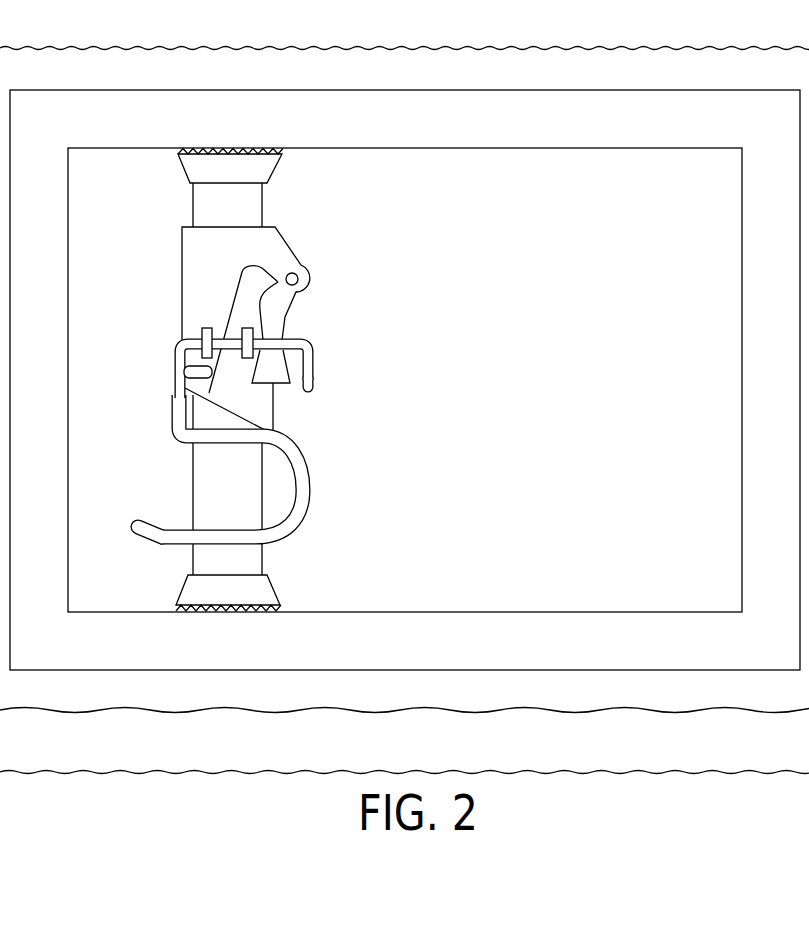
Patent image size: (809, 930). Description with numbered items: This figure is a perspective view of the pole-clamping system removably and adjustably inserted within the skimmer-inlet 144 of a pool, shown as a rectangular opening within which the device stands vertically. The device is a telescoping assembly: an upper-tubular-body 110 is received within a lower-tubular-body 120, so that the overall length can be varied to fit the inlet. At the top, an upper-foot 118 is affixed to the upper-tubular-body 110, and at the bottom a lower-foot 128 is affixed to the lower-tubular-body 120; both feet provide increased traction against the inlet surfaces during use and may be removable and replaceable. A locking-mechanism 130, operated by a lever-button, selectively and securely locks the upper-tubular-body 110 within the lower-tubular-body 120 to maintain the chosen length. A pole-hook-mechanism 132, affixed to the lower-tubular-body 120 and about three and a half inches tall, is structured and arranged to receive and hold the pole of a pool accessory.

The upper-tubular-body 110 is at (287, 207).
The upper-foot 118 is at (182, 168).
The lower-tubular-body 120 is at (283, 559).
The lower-foot 128 is at (188, 585).
The locking-mechanism 130 is at (322, 303).
The pole-hook-mechanism 132 is at (164, 367).
The skimmer-inlet 144 is at (661, 210).